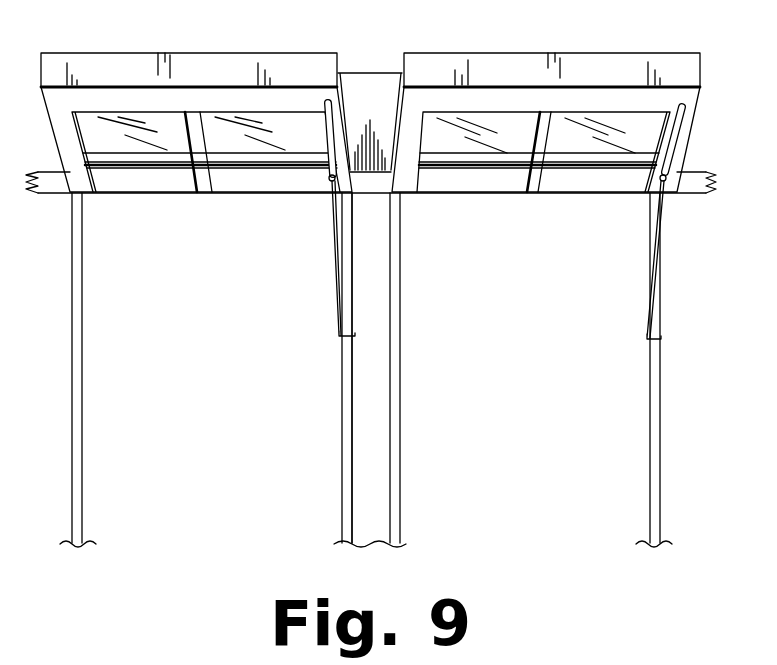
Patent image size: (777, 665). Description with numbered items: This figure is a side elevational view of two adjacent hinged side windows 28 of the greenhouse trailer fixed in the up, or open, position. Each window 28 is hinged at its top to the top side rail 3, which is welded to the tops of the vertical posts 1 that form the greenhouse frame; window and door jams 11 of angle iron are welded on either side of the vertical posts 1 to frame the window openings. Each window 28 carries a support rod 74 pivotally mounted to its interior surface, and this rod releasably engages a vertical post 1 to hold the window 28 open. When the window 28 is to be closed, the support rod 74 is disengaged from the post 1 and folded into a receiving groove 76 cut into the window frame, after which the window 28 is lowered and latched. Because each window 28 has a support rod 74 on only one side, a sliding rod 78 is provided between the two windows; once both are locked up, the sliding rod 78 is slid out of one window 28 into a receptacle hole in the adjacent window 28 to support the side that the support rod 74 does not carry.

The vertical post 1 is at (377, 410).
The top side rail 3 is at (703, 172).
The window and door jam 11 is at (400, 325).
The side window 28 is at (240, 53).
The support rod 74 is at (336, 280).
The receiving groove 76 is at (320, 105).
The sliding rod 78 is at (370, 72).